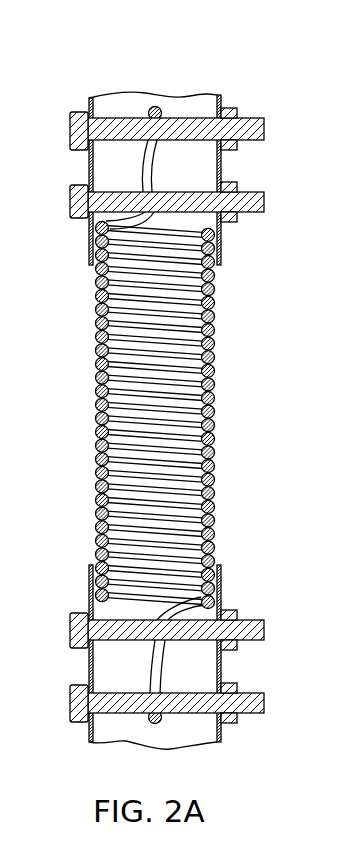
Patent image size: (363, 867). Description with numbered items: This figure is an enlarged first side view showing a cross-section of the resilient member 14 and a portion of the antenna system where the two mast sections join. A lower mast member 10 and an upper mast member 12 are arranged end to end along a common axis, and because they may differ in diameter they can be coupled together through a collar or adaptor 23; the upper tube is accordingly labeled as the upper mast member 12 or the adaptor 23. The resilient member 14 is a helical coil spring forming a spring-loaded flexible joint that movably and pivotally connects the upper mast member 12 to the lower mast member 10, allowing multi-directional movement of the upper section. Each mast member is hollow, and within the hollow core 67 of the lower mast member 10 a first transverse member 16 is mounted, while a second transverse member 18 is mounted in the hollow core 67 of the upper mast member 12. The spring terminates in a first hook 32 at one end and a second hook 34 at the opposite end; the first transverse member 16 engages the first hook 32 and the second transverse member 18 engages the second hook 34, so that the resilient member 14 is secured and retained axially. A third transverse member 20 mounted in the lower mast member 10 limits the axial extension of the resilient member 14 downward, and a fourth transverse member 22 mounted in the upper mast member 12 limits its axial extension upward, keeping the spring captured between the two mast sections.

The lower mast member 10 is at (222, 733).
The upper mast member 12 is at (207, 153).
The adaptor 23 is at (222, 99).
The resilient member 14 is at (95, 403).
The first transverse member 16 is at (76, 698).
The second transverse member 18 is at (76, 125).
The third transverse member 20 is at (76, 630).
The fourth transverse member 22 is at (76, 203).
The first hook 32 is at (162, 667).
The second hook 34 is at (150, 168).
The hollow core 67 is at (125, 110).